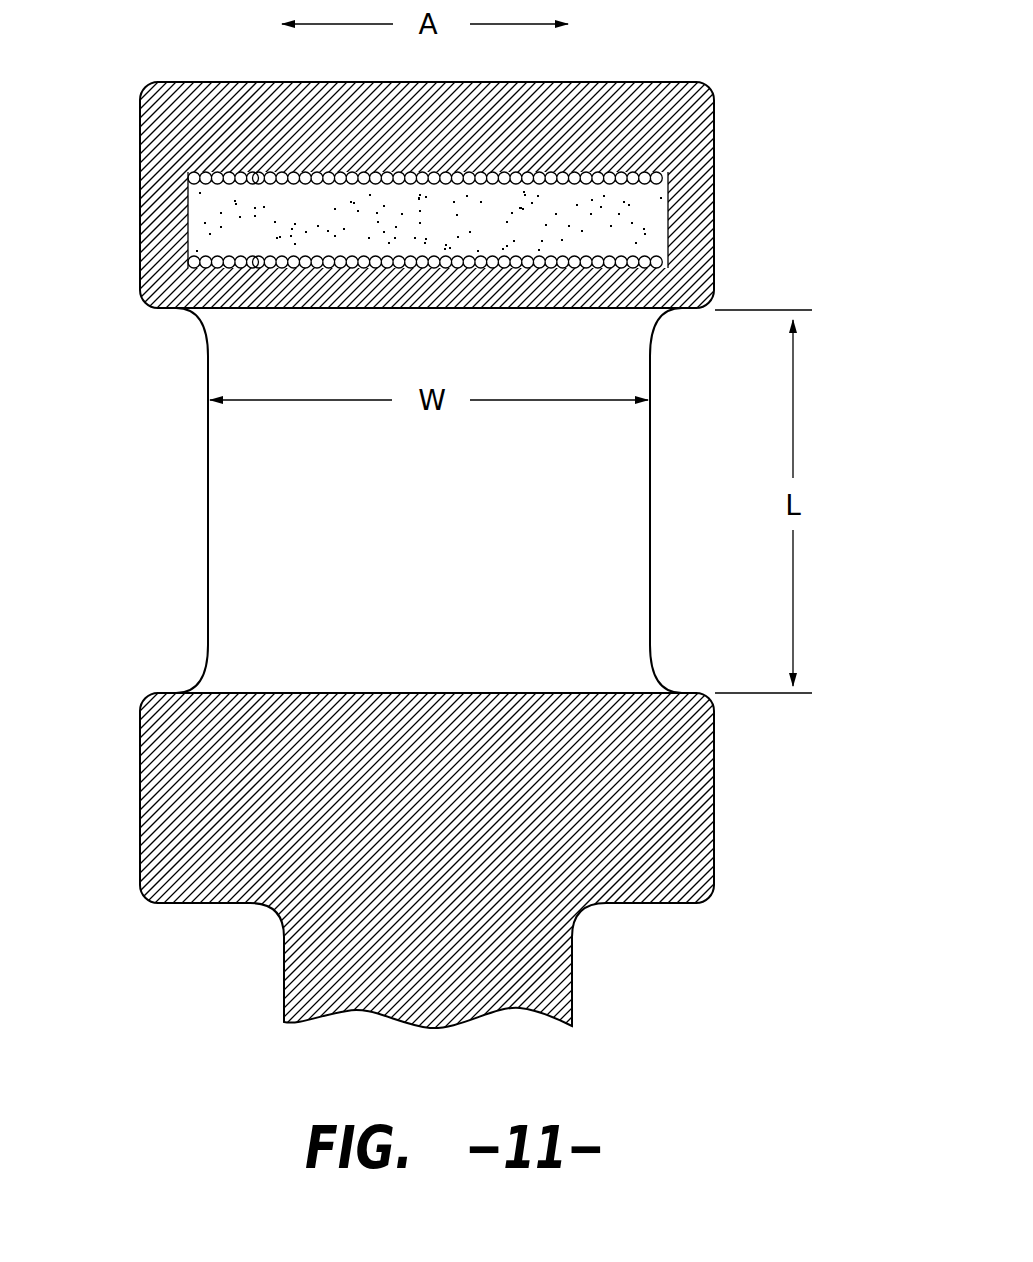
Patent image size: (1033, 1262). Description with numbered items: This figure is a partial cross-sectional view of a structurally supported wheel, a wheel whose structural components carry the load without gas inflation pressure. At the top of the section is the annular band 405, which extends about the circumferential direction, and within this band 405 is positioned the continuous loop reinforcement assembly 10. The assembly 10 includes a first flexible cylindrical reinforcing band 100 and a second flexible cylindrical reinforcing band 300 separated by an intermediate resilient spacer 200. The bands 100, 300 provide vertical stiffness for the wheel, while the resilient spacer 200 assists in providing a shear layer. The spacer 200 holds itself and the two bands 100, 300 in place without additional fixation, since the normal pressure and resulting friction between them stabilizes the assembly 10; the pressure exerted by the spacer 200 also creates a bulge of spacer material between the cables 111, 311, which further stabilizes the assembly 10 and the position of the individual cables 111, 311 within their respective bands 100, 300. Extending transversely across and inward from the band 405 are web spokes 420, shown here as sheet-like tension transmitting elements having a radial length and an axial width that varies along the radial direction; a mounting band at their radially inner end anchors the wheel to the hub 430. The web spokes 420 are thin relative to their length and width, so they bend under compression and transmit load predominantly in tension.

The continuous loop reinforcement assembly 10 is at (573, 166).
The first flexible cylindrical reinforcing band 100 is at (454, 300).
The cables 111 is at (253, 268).
The intermediate resilient spacer 200 is at (670, 225).
The second flexible cylindrical reinforcing band 300 is at (439, 102).
The cables 311 is at (250, 172).
The annular band 405 is at (168, 215).
The web spokes 420 is at (651, 482).
The hub 430 is at (716, 826).